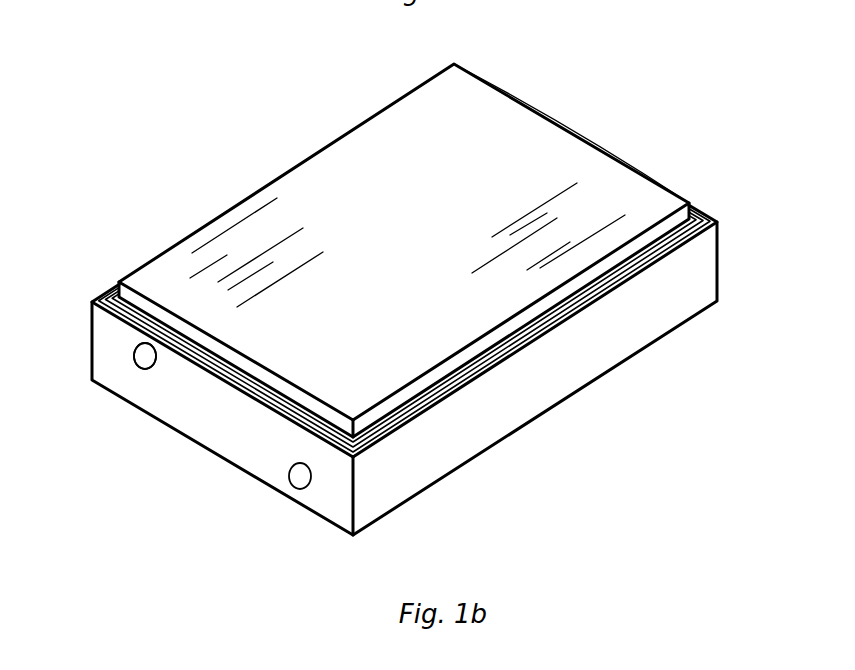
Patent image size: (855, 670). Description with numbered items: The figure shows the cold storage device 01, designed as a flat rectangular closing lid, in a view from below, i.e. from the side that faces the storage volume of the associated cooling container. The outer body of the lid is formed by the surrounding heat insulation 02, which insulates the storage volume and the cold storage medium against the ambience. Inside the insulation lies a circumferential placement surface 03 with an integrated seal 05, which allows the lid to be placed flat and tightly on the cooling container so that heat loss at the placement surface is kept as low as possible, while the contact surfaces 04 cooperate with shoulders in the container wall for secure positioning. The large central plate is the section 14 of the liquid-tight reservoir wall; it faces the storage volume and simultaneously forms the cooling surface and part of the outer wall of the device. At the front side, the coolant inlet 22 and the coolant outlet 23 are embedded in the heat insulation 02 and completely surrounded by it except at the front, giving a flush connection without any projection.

The cold storage device 01 is at (125, 46).
The heat insulation 02 is at (598, 351).
The placement surface 03 is at (702, 223).
The contact surfaces 04 is at (628, 253).
The seal 05 is at (483, 375).
The section of the reservoir wall 14 is at (315, 200).
The coolant inlet 22 is at (290, 482).
The coolant outlet 23 is at (133, 357).